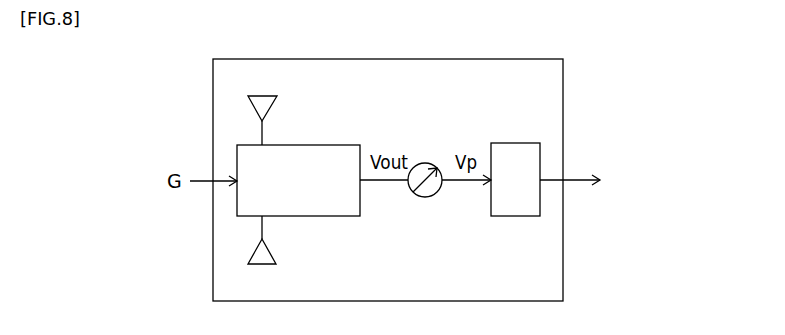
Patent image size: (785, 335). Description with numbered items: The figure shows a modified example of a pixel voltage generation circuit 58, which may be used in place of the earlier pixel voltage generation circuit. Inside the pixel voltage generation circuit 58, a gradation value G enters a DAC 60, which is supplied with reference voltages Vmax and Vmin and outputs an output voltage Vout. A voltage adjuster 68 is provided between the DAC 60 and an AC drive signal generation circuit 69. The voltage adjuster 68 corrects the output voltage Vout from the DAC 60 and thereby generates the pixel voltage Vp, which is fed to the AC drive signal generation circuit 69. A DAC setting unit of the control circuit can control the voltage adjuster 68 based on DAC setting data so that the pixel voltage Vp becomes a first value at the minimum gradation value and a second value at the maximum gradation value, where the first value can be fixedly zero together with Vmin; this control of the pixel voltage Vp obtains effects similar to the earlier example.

The pixel voltage generation circuit 58 is at (563, 70).
The DAC 60 is at (315, 145).
The voltage adjuster 68 is at (425, 197).
The AC drive signal generation circuit 69 is at (513, 143).